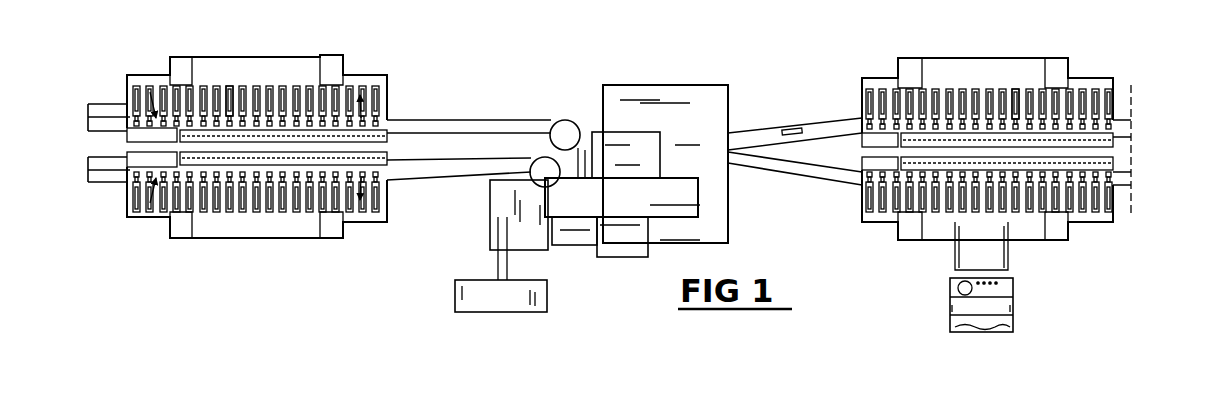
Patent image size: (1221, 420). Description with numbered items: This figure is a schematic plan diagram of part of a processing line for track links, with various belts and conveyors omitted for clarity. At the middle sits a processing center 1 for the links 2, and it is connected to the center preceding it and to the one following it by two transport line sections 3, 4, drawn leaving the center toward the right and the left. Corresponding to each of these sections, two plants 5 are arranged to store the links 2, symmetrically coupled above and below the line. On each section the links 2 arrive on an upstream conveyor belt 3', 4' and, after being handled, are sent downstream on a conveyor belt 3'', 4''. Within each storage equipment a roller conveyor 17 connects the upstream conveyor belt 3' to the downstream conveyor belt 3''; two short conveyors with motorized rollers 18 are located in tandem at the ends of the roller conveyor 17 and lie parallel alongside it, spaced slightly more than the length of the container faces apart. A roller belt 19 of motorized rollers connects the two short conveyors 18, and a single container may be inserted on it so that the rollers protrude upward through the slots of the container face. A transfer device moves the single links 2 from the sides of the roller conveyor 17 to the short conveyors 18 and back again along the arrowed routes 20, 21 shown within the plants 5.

The processing center 1 is at (583, 250).
The links 2 is at (779, 128).
The transport line section 3 is at (942, 219).
The conveyor belt 3' is at (1157, 143).
The conveyor belt 3'' is at (795, 76).
The transport line section 4 is at (309, 237).
The conveyor belt 4' is at (469, 68).
The conveyor belt 4'' is at (109, 67).
The plant 5 is at (392, 72).
The roller conveyor 17 is at (250, 96).
The short conveyors with motorized rollers 18 is at (166, 100).
The roller belt 19 is at (229, 108).
The arrowed route 20 is at (362, 95).
The arrowed route 21 is at (149, 92).